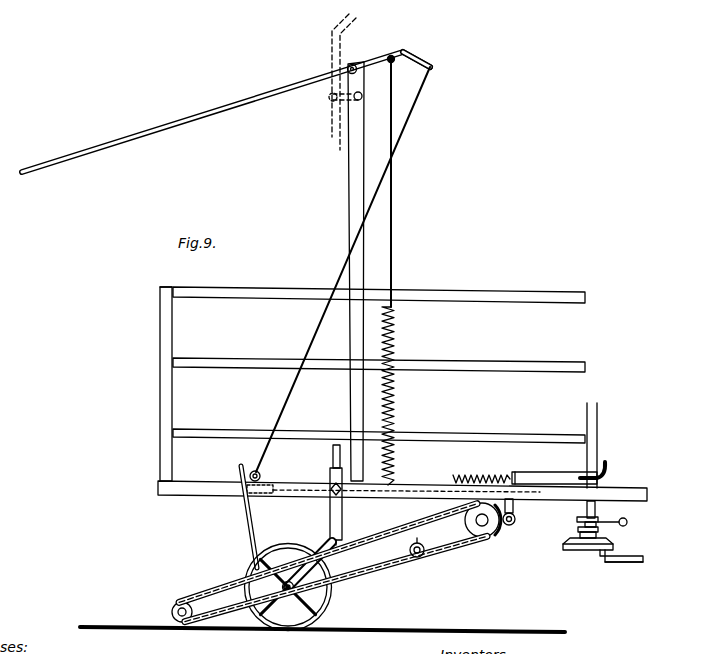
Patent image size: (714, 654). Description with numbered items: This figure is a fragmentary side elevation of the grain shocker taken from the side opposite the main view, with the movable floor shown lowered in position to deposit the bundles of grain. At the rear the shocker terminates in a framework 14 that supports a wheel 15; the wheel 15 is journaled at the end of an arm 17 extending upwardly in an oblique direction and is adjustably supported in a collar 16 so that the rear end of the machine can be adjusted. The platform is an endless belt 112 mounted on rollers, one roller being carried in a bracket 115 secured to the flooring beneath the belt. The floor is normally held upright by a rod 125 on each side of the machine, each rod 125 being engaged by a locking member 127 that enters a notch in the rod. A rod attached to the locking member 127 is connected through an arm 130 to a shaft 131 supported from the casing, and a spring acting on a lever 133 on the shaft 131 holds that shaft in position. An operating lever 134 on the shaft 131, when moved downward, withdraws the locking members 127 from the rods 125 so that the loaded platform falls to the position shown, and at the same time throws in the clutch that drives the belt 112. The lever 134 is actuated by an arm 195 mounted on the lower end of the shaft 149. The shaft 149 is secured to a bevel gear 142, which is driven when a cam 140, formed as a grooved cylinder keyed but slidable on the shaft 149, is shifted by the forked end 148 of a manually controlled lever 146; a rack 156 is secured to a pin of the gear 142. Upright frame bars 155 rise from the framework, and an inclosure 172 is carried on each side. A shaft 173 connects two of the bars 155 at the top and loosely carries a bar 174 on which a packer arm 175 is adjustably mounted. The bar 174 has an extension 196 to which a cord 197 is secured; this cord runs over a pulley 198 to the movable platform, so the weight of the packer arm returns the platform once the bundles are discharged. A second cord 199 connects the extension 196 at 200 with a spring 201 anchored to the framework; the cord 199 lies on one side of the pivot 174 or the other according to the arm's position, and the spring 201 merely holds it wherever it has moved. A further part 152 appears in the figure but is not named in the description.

The framework 14 is at (193, 487).
The wheel 15 is at (334, 607).
The collar 16 is at (342, 512).
The arm 17 is at (318, 548).
The endless belt 112 is at (190, 600).
The bracket 115 is at (337, 592).
The rod 125 is at (248, 530).
The locking member 127 is at (263, 495).
The arm 130 is at (520, 492).
The shaft 131 is at (510, 528).
The lever 133 is at (487, 469).
The operating lever 134 is at (545, 470).
The cam 140 is at (578, 529).
The bevel gear 142 is at (572, 552).
The manually controlled lever 146 is at (628, 522).
The forked end 148 is at (601, 534).
The shaft 149 is at (598, 444).
The bracket 152 is at (629, 564).
The frame bar 155 is at (351, 186).
The rack 156 is at (622, 554).
The inclosure 172 is at (226, 289).
The shaft 173 is at (332, 113).
The bar 174 is at (352, 65).
The packer arm 175 is at (79, 158).
The arm 195 is at (579, 471).
The extension 196 is at (425, 46).
The cord 197 is at (402, 142).
The pulley 198 is at (261, 474).
The cord 199 is at (393, 249).
The connection point 200 is at (385, 48).
The spring 201 is at (395, 402).